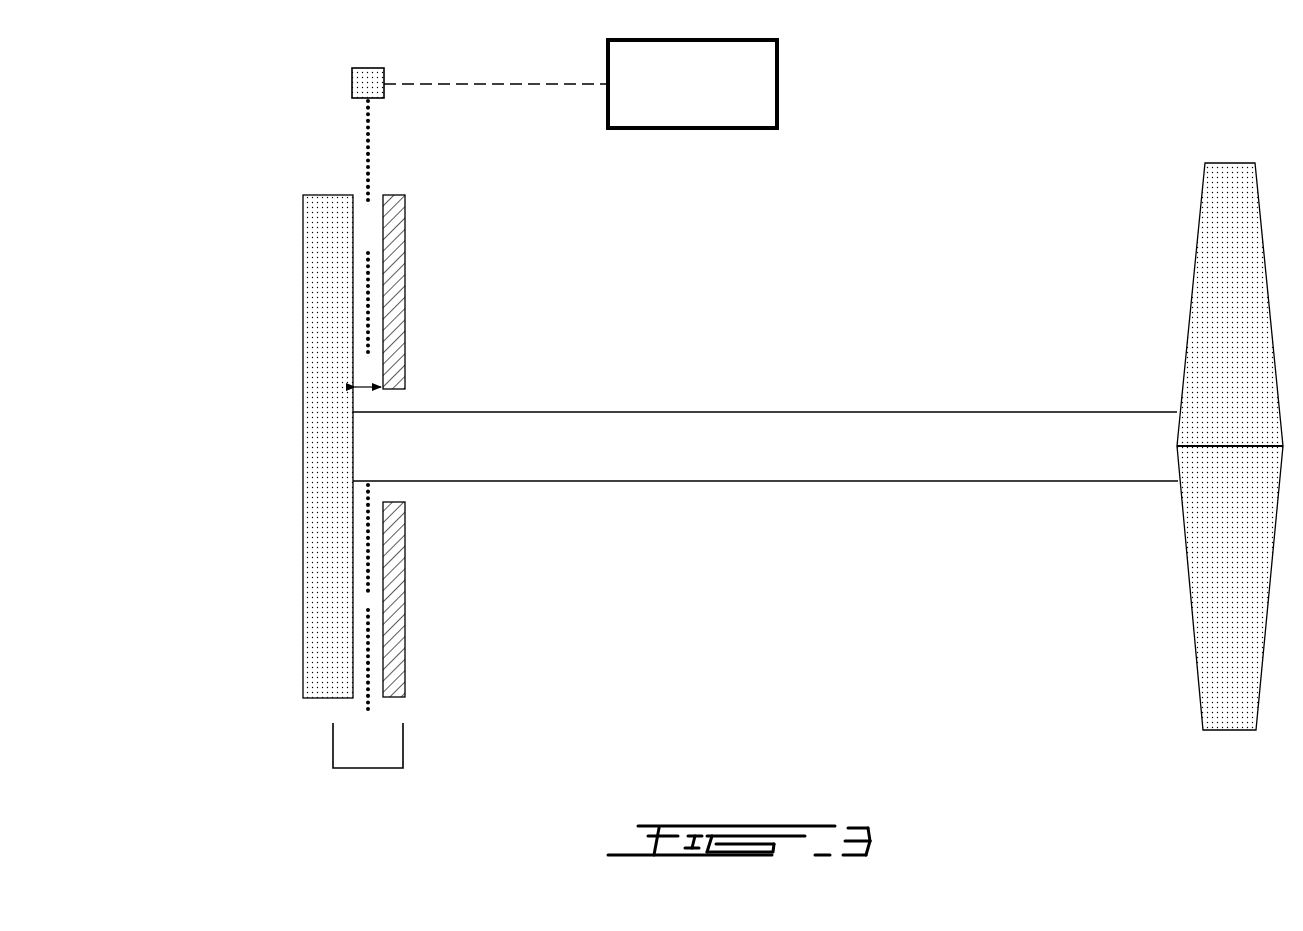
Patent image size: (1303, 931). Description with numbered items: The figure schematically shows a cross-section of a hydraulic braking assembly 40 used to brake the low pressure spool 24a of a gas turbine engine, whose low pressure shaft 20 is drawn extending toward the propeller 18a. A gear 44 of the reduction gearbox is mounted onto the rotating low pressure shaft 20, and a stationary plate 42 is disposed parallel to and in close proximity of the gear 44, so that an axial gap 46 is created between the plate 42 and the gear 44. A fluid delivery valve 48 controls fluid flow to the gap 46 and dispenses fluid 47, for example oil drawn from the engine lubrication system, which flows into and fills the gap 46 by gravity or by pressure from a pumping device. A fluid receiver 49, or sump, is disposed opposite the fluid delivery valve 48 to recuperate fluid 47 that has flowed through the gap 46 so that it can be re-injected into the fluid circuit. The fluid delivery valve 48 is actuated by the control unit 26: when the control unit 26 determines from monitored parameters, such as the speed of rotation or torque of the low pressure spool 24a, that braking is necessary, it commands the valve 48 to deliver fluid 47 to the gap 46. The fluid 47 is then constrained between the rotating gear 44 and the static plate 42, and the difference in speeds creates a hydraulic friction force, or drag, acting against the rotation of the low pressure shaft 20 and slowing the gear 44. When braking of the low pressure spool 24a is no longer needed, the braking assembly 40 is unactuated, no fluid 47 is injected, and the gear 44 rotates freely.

The propeller 18a is at (1222, 630).
The low pressure shaft 20 is at (540, 482).
The low pressure spool 24a is at (848, 253).
The control unit 26 is at (777, 84).
The braking assembly 40 is at (528, 292).
The plate 42 is at (405, 282).
The gear 44 is at (303, 575).
The axial gap 46 is at (369, 390).
The fluid 47 is at (368, 150).
The fluid delivery valve 48 is at (352, 83).
The fluid receiver 49 is at (333, 745).